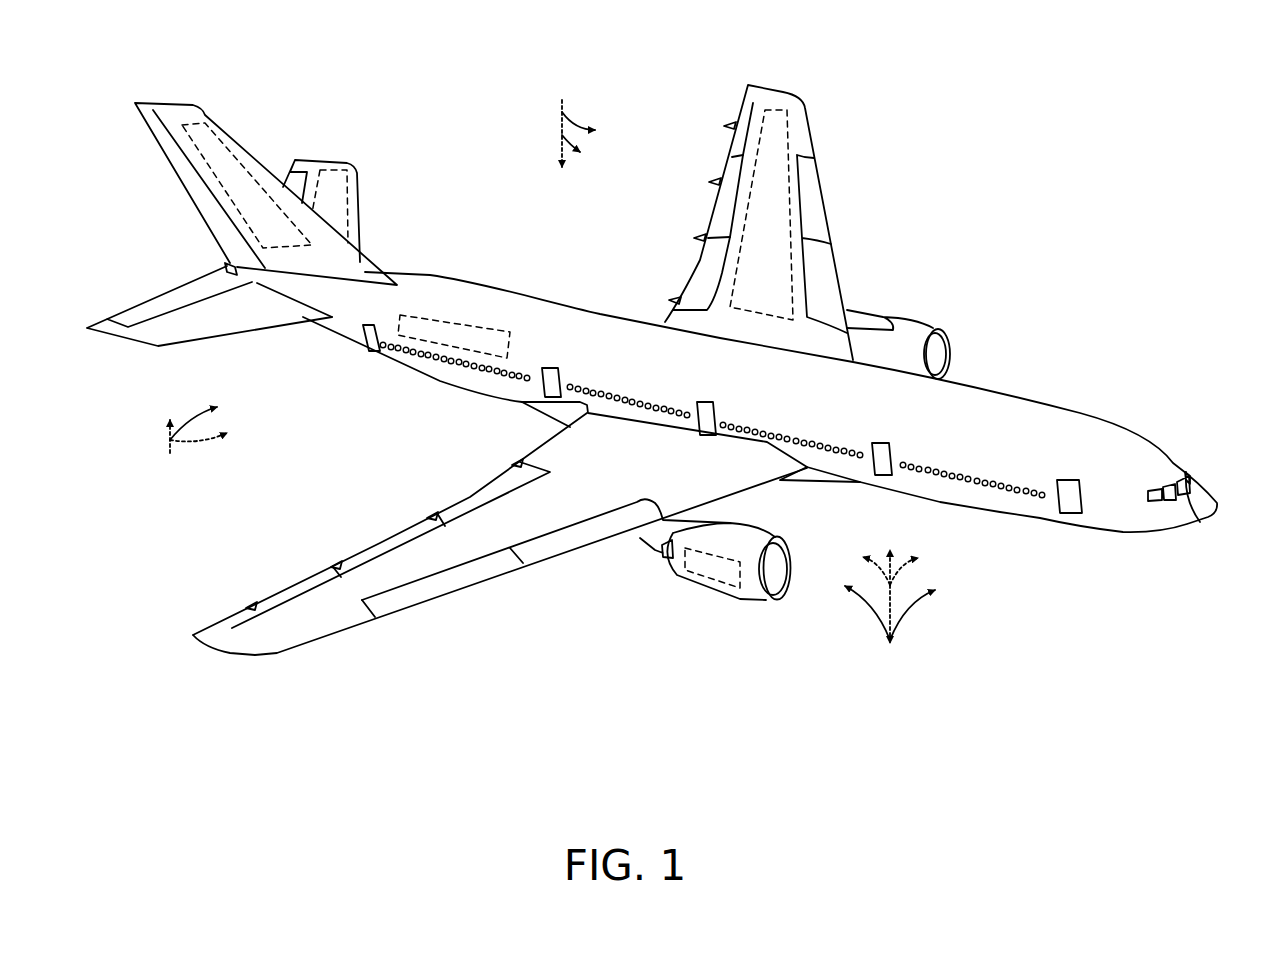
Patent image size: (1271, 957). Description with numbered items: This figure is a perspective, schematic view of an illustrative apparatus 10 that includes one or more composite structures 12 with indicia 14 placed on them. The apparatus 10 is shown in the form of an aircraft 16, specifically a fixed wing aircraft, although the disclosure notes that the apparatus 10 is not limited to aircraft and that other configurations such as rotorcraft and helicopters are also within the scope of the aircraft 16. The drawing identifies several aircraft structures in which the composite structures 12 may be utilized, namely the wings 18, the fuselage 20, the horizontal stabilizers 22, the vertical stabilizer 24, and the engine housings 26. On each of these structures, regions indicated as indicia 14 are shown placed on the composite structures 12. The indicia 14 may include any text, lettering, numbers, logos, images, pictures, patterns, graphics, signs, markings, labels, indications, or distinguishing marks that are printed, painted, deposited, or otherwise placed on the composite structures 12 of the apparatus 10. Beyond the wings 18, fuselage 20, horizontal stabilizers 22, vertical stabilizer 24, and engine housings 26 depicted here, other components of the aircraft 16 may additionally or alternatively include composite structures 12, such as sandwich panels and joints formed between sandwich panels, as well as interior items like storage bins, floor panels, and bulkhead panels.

The apparatus 10 is at (1075, 128).
The composite structure 12 is at (562, 100).
The indicia 14 is at (228, 130).
The aircraft 16 is at (1087, 190).
The wing 18 is at (330, 633).
The fuselage 20 is at (1057, 430).
The horizontal stabilizer 22 is at (160, 337).
The vertical stabilizer 24 is at (175, 98).
The engine housing 26 is at (748, 602).